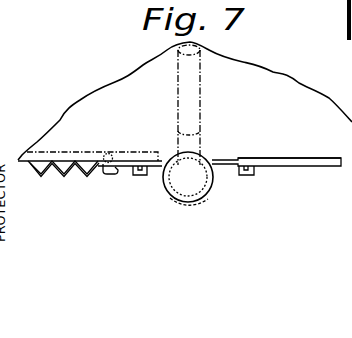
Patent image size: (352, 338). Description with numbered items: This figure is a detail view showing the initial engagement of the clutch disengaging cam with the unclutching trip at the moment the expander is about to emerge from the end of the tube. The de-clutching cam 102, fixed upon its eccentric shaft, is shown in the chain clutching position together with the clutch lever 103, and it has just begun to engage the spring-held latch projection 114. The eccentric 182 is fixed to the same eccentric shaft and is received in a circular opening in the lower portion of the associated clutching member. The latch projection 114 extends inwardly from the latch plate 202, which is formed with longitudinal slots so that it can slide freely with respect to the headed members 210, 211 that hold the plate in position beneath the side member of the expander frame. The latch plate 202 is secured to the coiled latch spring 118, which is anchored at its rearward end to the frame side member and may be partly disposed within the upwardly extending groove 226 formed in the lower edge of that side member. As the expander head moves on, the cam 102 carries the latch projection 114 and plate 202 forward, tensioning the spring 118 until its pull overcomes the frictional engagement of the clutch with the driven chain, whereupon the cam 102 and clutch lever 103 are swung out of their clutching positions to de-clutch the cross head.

The de-clutching cam 102 is at (172, 197).
The clutch lever 103 is at (202, 103).
The latch projection 114 is at (232, 162).
The latch spring 118 is at (72, 170).
The eccentric 182 is at (206, 195).
The latch plate 202 is at (293, 165).
The headed member 210 is at (143, 177).
The headed member 211 is at (253, 176).
The groove 226 is at (86, 144).